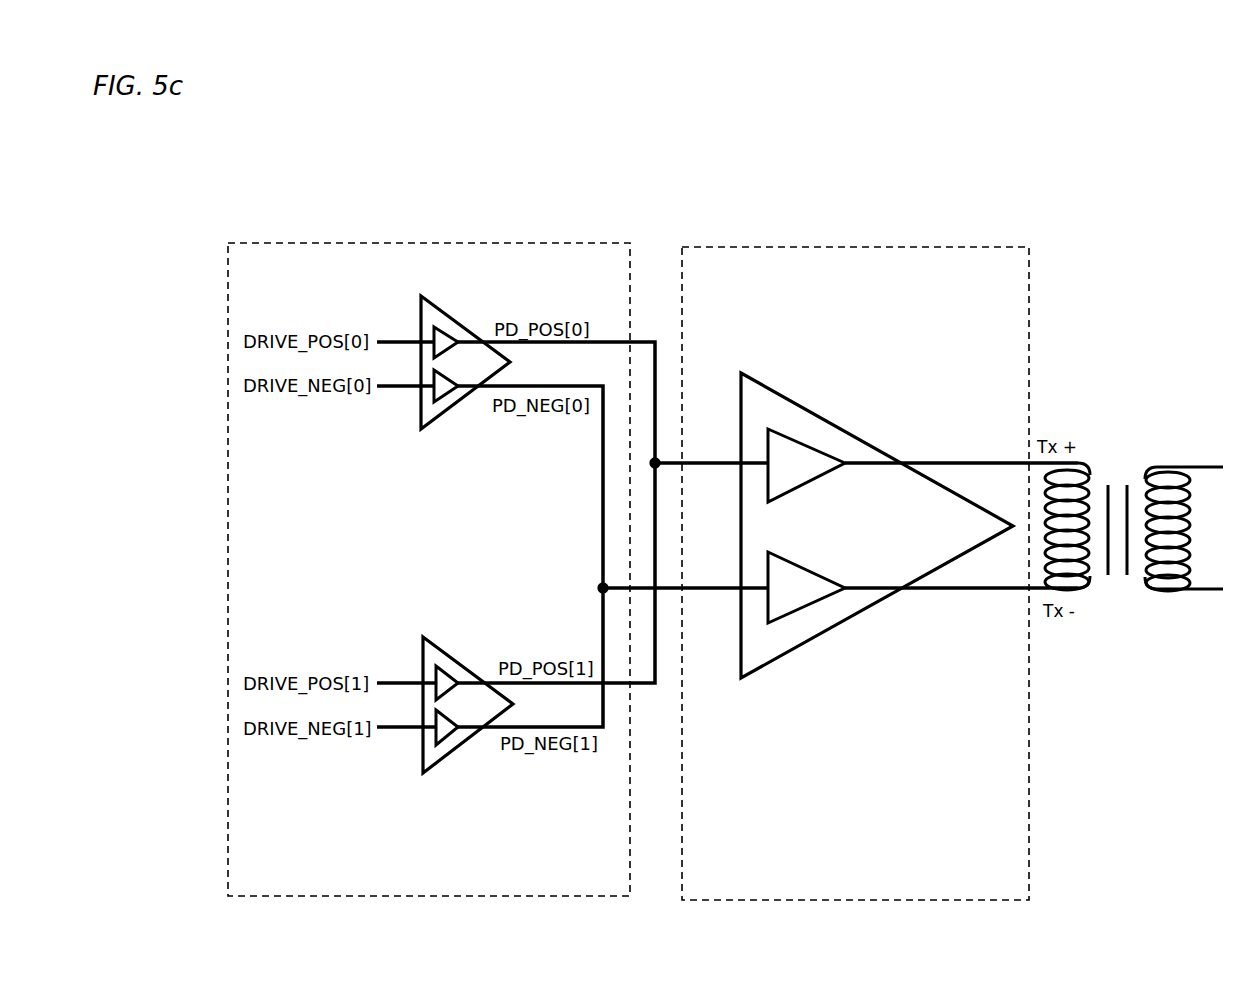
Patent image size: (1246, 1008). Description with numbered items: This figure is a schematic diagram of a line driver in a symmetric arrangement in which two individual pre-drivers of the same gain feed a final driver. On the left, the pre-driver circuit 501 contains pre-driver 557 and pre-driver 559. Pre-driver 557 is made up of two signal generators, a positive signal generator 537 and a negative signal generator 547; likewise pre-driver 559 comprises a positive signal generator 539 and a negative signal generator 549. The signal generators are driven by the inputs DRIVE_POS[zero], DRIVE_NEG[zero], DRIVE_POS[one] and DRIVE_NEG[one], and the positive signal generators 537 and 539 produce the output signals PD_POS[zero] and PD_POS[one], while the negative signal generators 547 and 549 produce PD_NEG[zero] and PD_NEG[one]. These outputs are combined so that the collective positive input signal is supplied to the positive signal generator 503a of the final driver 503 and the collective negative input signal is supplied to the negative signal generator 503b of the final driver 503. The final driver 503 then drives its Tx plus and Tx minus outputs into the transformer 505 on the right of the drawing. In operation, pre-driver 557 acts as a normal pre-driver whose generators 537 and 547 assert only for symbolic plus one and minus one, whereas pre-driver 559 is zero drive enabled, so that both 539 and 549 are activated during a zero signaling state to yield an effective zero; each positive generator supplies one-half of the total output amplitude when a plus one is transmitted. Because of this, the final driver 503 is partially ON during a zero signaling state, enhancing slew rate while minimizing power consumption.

The pre-driver circuit 501 is at (429, 243).
The final driver 503 is at (853, 247).
The positive signal generator 503a is at (820, 478).
The negative signal generator 503b is at (822, 603).
The transformer 505 is at (1118, 452).
The positive signal generator 537 is at (448, 332).
The negative signal generator 547 is at (445, 388).
The pre-driver 557 is at (445, 304).
The positive signal generator 539 is at (447, 668).
The negative signal generator 549 is at (447, 737).
The pre-driver 559 is at (445, 647).